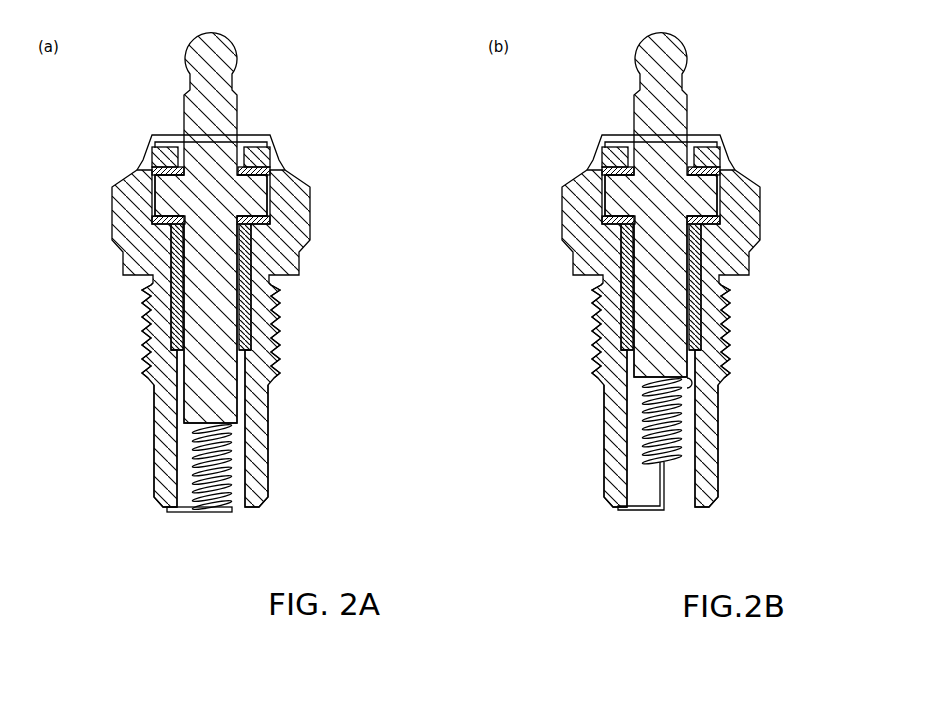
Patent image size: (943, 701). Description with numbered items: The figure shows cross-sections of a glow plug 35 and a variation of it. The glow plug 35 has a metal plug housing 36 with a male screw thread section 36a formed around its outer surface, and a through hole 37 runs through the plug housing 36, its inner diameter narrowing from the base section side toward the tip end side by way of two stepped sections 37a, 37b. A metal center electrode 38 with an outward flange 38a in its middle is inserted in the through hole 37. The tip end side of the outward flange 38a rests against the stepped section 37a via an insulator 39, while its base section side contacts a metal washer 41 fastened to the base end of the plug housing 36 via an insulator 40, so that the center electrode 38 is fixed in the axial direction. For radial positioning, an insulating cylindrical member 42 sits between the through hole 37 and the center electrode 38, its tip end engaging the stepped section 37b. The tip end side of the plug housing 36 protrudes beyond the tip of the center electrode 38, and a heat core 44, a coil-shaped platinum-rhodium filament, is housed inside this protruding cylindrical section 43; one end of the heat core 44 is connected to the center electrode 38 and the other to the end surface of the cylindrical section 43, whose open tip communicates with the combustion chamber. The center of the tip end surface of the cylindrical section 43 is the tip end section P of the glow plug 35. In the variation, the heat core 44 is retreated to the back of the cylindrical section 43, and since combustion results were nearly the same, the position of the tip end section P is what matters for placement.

In FIG. 2A, the glow plug 35 is at (318, 90).
In FIG. 2B, the glow plug 35 is at (662, 310).
In FIG. 2A, the plug housing 36 is at (303, 217).
In FIG. 2B, the plug housing 36 is at (688, 338).
In FIG. 2A, the male screw thread section 36a is at (285, 302).
In FIG. 2B, the male screw thread section 36a is at (703, 330).
In FIG. 2A, the through hole 37 is at (237, 400).
In FIG. 2B, the through hole 37 is at (708, 311).
In FIG. 2A, the stepped section 37a is at (152, 221).
In FIG. 2B, the stepped section 37a is at (569, 228).
In FIG. 2A, the stepped section 37b is at (172, 348).
In FIG. 2B, the stepped section 37b is at (610, 351).
In FIG. 2A, the center electrode 38 is at (211, 102).
In FIG. 2B, the center electrode 38 is at (680, 205).
In FIG. 2A, the outward flange 38a is at (252, 198).
In FIG. 2B, the outward flange 38a is at (707, 192).
In FIG. 2A, the insulator 39 is at (268, 222).
In FIG. 2B, the insulator 39 is at (751, 239).
In FIG. 2A, the insulator 40 is at (268, 168).
In FIG. 2B, the insulator 40 is at (700, 158).
In FIG. 2A, the metal washer 41 is at (270, 145).
In FIG. 2B, the metal washer 41 is at (685, 142).
In FIG. 2A, the cylindrical member 42 is at (171, 283).
In FIG. 2B, the cylindrical member 42 is at (615, 287).
In FIG. 2A, the cylindrical section 43 is at (260, 450).
In FIG. 2B, the cylindrical section 43 is at (688, 428).
In FIG. 2A, the heat core 44 is at (190, 457).
In FIG. 2B, the heat core 44 is at (618, 421).
In FIG. 2A, the tip end section P is at (210, 512).
In FIG. 2B, the tip end section P is at (645, 524).